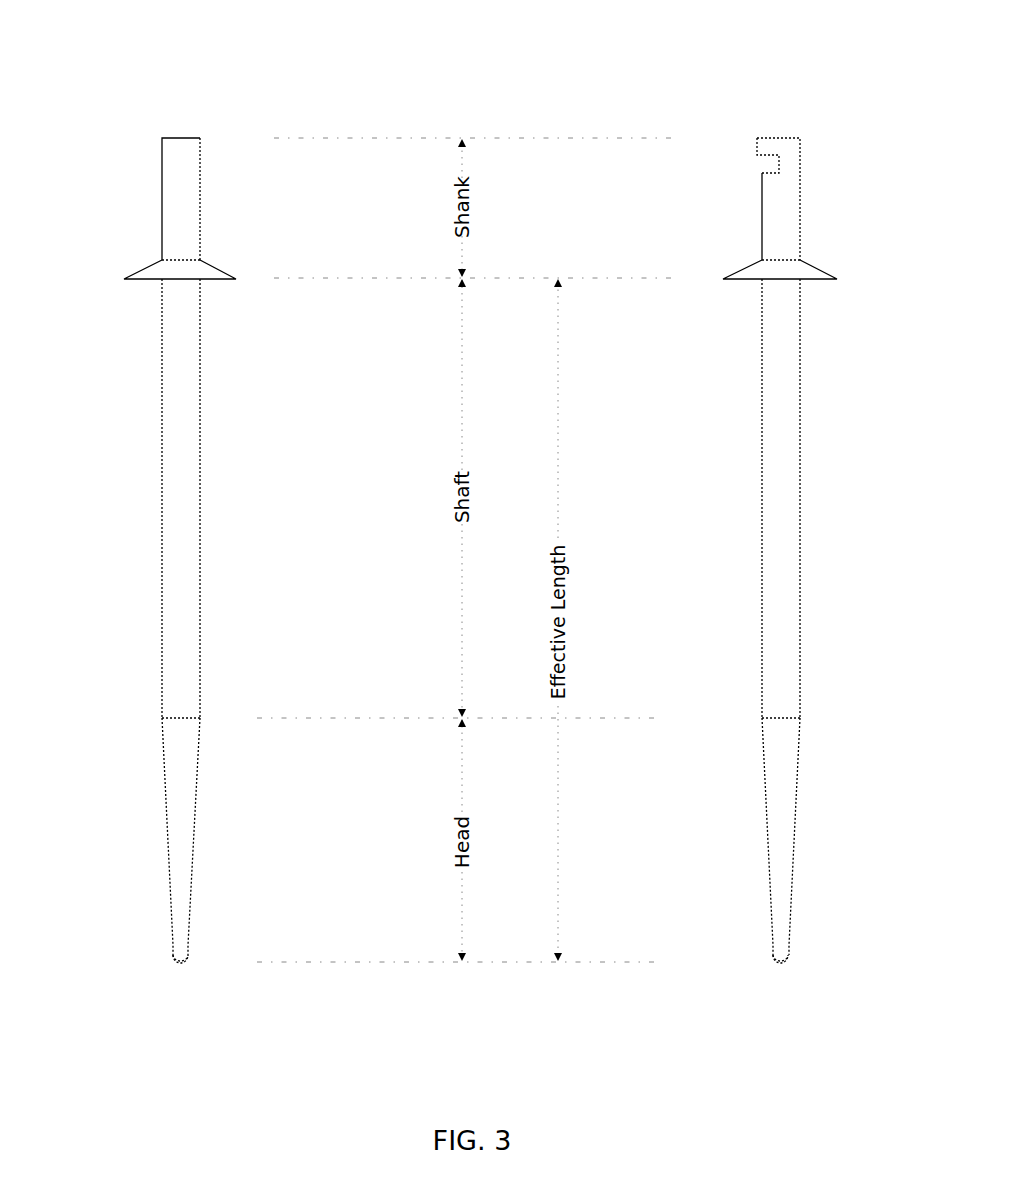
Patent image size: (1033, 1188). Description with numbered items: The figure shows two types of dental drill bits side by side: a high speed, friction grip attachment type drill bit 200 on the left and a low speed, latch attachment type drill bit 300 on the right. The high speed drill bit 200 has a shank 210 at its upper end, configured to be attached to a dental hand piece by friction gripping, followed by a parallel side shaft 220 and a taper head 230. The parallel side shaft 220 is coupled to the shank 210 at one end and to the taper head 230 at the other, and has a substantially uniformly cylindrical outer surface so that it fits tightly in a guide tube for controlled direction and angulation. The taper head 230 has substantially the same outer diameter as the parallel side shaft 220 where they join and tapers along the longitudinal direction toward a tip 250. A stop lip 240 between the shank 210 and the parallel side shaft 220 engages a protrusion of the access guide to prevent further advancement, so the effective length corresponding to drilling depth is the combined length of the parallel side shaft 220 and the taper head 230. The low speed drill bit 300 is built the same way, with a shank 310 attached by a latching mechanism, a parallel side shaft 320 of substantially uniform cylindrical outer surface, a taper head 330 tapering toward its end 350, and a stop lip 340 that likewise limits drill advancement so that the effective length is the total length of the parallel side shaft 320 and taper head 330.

The high speed, friction grip attachment type drill bit 200 is at (166, 92).
The shank 210 is at (162, 202).
The parallel side shaft 220 is at (162, 465).
The taper head 230 is at (164, 783).
The stop lip 240 is at (145, 268).
The tip 250 is at (178, 961).
The low speed, latch attachment type drill bit 300 is at (772, 97).
The shank 310 is at (800, 218).
The parallel side shaft 320 is at (800, 490).
The taper head 330 is at (799, 787).
The stop lip 340 is at (820, 267).
The tip of second pin 350 is at (786, 960).